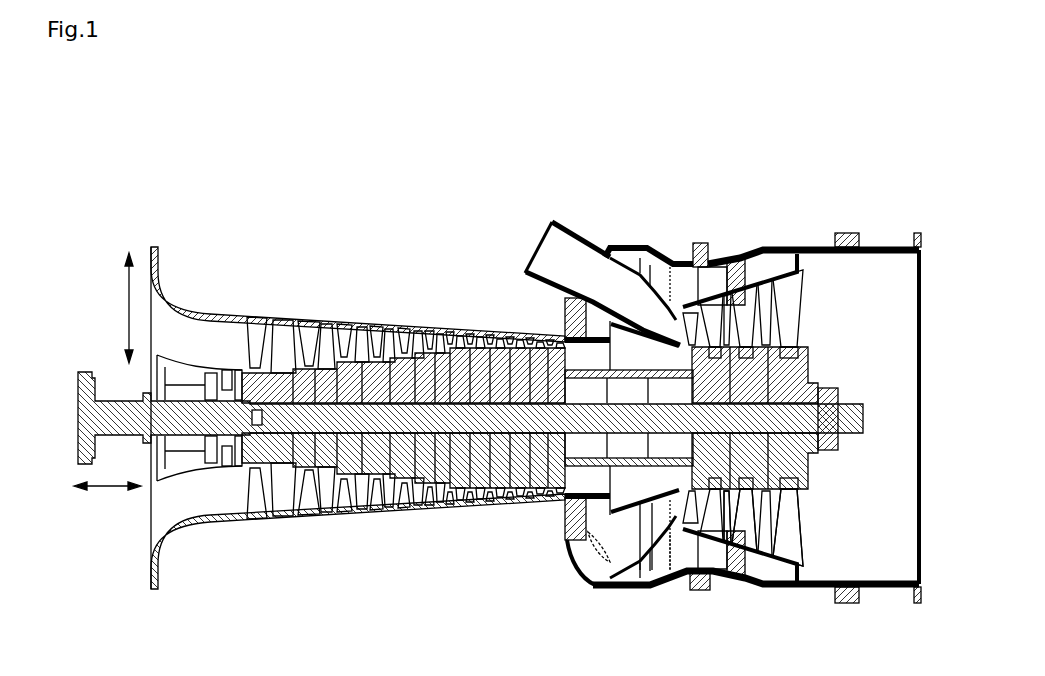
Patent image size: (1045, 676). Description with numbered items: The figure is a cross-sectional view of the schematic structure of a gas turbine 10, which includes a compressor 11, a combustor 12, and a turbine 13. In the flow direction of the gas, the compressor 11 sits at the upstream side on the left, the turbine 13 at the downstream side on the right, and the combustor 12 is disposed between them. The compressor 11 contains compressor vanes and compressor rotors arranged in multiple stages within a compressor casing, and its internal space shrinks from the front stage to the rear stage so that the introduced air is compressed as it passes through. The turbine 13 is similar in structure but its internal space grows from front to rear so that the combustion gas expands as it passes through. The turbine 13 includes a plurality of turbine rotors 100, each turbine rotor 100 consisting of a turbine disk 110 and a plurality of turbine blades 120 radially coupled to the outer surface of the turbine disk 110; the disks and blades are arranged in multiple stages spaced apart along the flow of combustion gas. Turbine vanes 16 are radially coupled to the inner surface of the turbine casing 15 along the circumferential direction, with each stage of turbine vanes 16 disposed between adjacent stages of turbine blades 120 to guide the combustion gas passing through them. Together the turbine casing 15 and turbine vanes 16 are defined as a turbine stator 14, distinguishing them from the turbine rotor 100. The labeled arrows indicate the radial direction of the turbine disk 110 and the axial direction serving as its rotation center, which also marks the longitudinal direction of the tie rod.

The gas turbine 10 is at (163, 157).
The compressor 11 is at (284, 309).
The combustor 12 is at (565, 221).
The turbine 13 is at (783, 231).
The turbine stator 14 is at (710, 152).
The turbine casing 15 is at (670, 300).
The turbine vanes 16 is at (746, 300).
The turbine rotor 100 is at (748, 527).
The turbine disk 110 is at (813, 494).
The turbine blades 120 is at (786, 498).